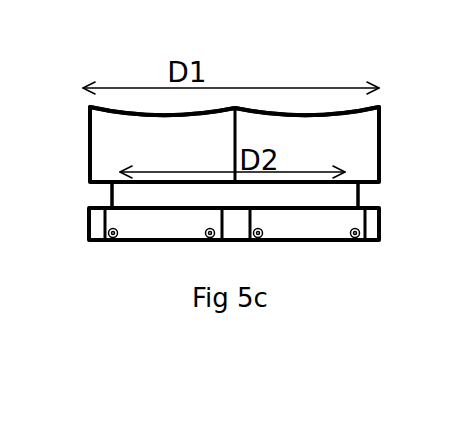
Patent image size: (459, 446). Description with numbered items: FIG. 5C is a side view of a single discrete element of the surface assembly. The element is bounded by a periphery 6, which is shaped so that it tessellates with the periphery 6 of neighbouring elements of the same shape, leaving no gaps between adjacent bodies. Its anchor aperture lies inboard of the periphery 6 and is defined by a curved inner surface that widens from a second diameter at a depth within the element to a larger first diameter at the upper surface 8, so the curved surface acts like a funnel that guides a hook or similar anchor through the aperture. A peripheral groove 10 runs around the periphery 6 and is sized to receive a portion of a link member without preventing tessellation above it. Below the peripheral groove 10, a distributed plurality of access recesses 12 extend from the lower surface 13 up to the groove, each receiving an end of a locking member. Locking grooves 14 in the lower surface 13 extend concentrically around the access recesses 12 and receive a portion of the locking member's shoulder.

The periphery 6 is at (88, 157).
The upper surface 8 is at (348, 110).
The peripheral groove 10 is at (365, 193).
The access recess 12 is at (93, 238).
The lower surface 13 is at (303, 240).
The locking groove 14 is at (114, 238).